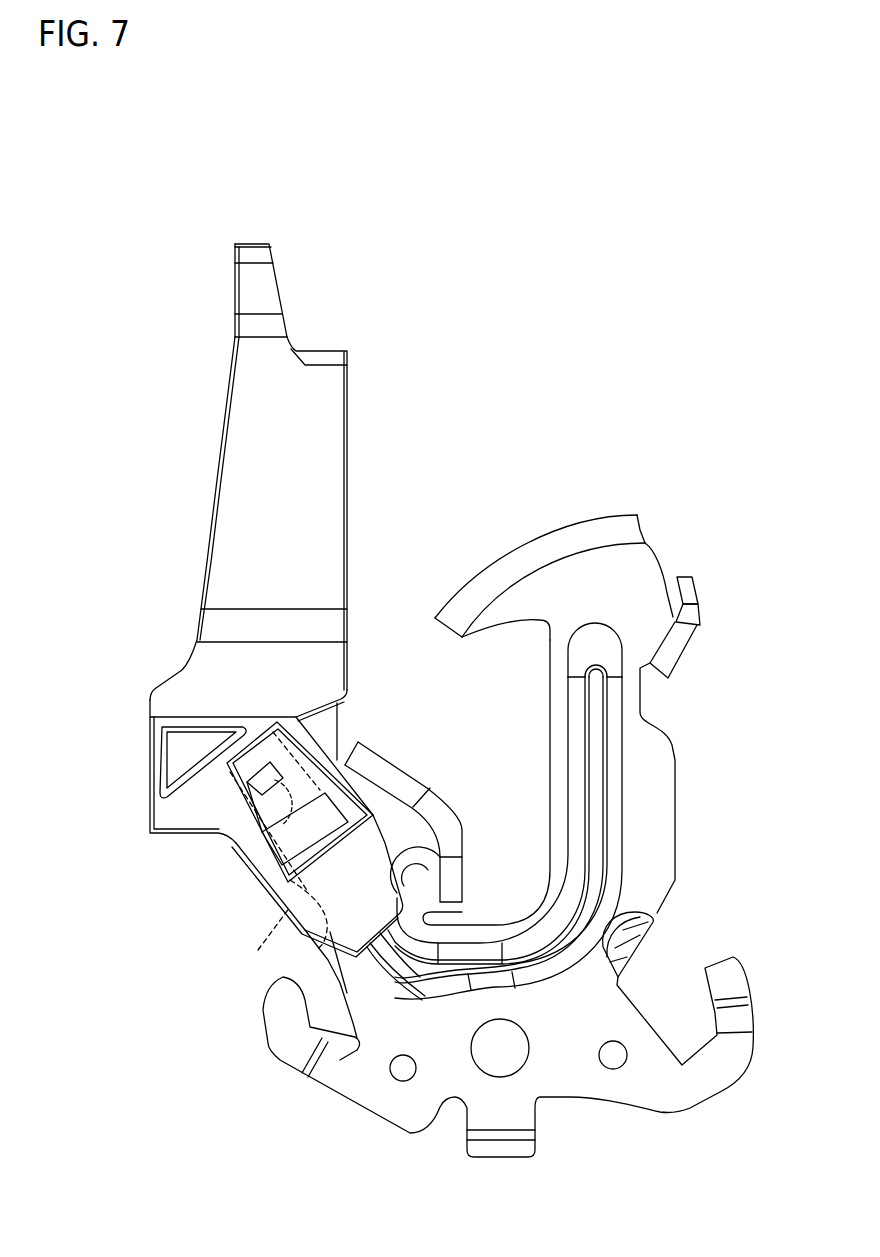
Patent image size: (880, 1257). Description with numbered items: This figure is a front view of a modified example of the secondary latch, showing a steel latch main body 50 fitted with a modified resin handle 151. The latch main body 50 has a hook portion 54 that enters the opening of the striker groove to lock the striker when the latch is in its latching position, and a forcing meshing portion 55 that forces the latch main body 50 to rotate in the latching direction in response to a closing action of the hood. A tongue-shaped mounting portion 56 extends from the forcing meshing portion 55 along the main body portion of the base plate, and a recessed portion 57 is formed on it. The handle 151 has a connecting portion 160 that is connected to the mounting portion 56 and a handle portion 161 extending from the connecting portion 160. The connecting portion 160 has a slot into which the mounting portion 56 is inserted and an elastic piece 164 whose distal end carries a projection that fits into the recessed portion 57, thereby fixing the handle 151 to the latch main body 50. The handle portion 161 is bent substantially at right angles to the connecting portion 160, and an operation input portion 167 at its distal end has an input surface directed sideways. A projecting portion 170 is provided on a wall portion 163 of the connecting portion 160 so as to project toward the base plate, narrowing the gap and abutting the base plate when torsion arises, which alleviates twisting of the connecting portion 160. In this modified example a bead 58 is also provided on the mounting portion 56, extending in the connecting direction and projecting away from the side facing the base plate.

The latch main body 50 is at (580, 500).
The hook portion 54 is at (515, 563).
The forcing meshing portion 55 is at (450, 866).
The mounting portion 56 is at (322, 932).
The recessed portion 57 is at (278, 835).
The bead 58 is at (427, 972).
The handle 151 is at (202, 437).
The connecting portion 160 is at (178, 808).
The handle portion 161 is at (222, 556).
The wall portion 163 is at (322, 872).
The elastic piece 164 is at (302, 790).
The operation input portion 167 is at (258, 258).
The projecting portion 170 is at (345, 815).